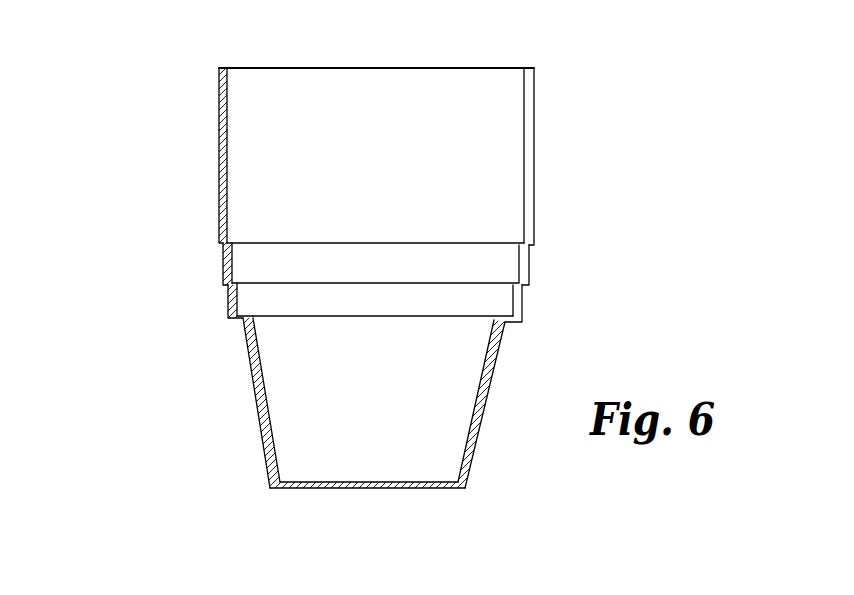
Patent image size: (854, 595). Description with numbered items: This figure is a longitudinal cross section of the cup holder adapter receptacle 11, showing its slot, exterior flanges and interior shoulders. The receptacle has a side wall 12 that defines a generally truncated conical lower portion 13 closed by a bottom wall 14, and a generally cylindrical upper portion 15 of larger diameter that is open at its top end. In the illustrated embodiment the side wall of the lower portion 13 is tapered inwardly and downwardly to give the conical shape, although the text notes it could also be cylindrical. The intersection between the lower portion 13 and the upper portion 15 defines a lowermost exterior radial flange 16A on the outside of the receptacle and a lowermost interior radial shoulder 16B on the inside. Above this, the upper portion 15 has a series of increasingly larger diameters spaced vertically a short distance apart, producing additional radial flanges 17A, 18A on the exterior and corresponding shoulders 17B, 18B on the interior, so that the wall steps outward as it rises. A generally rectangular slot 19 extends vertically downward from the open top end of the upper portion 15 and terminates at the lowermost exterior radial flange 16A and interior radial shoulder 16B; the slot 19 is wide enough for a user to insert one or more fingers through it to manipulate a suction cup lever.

The cup holder adapter receptacle 11 is at (575, 122).
The side wall 12 is at (218, 107).
The lower portion 13 is at (261, 415).
The bottom wall 14 is at (342, 490).
The upper portion 15 is at (218, 140).
The lowermost exterior radial flange 16A is at (229, 320).
The lowermost interior radial shoulder 16B is at (253, 317).
The radial flange 17A is at (227, 284).
The shoulder 17B is at (236, 283).
The radial flange 18A is at (222, 243).
The shoulder 18B is at (232, 252).
The slot 19 is at (534, 212).